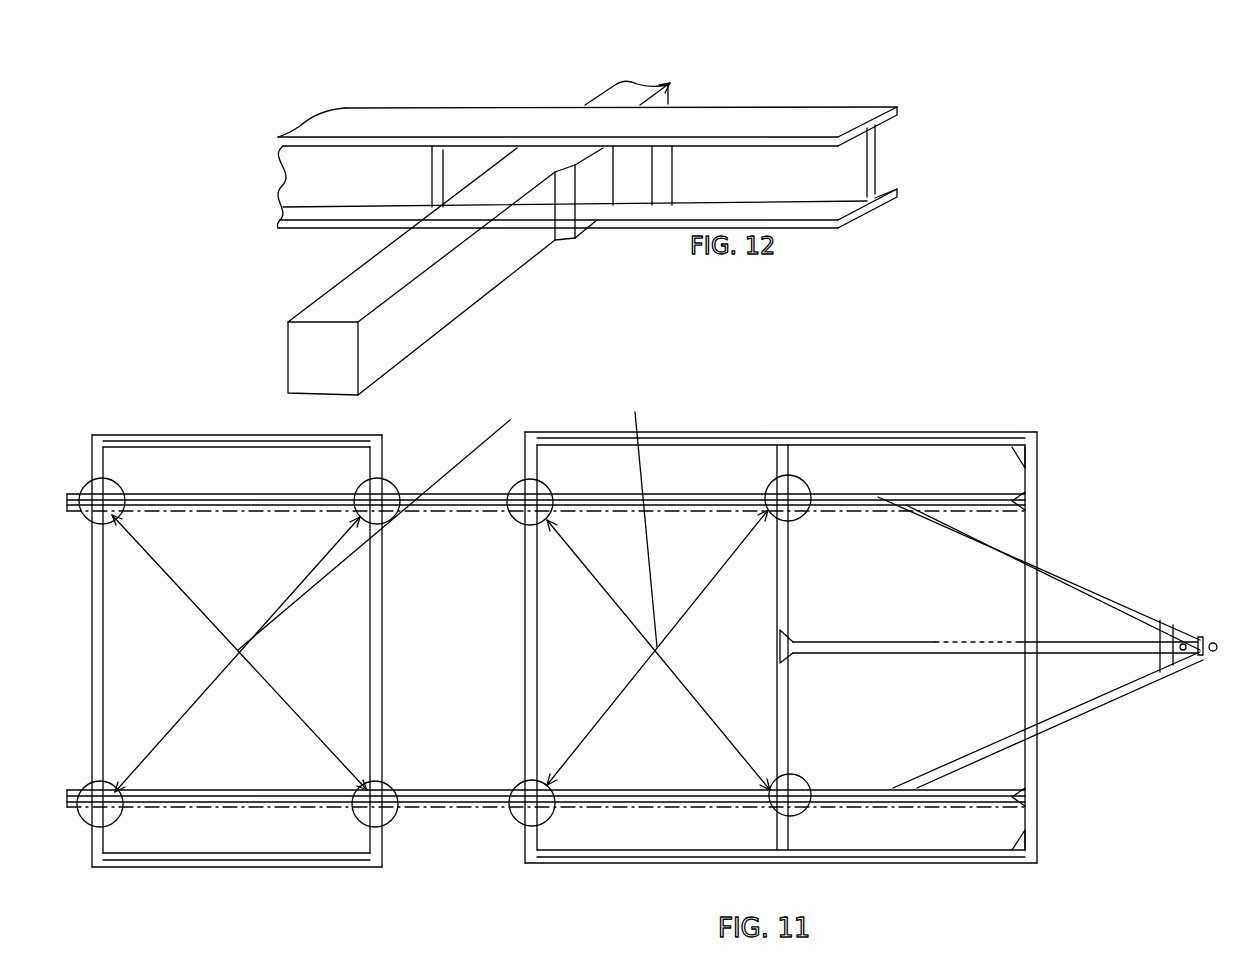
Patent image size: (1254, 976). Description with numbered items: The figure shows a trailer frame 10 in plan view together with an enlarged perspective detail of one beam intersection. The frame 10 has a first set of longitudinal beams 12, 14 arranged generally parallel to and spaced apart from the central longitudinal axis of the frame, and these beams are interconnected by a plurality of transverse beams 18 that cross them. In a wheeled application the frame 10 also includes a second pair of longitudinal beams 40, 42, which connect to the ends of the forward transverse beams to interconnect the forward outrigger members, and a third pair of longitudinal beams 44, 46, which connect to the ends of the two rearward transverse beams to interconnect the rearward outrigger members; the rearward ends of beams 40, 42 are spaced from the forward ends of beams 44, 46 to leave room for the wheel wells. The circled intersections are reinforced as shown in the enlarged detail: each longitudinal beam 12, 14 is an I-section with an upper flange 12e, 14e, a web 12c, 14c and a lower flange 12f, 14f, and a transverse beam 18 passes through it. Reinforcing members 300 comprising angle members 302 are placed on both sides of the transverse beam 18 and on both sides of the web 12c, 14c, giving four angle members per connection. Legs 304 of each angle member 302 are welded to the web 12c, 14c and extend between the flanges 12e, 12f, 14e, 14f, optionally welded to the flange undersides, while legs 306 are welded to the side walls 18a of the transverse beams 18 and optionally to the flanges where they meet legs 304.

In FIG. 11, the frame 10 is at (642, 641).
In FIG. 12, the longitudinal beam 12 is at (651, 160).
In FIG. 11, the longitudinal beam 12 is at (237, 515).
In FIG. 12, the longitudinal beam 14 is at (651, 160).
In FIG. 11, the longitudinal beam 14 is at (237, 787).
In FIG. 12, the flange 12e is at (638, 126).
In FIG. 12, the flange 14e is at (897, 110).
In FIG. 12, the web 12c is at (654, 166).
In FIG. 12, the web 14c is at (852, 170).
In FIG. 12, the flange 12f is at (650, 213).
In FIG. 12, the flange 14f is at (650, 213).
In FIG. 12, the transverse beam 18 is at (479, 238).
In FIG. 11, the transverse beam 18 is at (105, 690).
In FIG. 12, the side wall 18a is at (490, 277).
In FIG. 11, the longitudinal beam 40 is at (847, 425).
In FIG. 11, the longitudinal beam 42 is at (840, 863).
In FIG. 11, the longitudinal beam 44 is at (224, 436).
In FIG. 11, the longitudinal beam 46 is at (250, 870).
In FIG. 12, the reinforcing member 300 is at (596, 167).
In FIG. 12, the angle member 302 is at (468, 170).
In FIG. 12, the leg 304 is at (443, 150).
In FIG. 12, the leg 306 is at (598, 160).